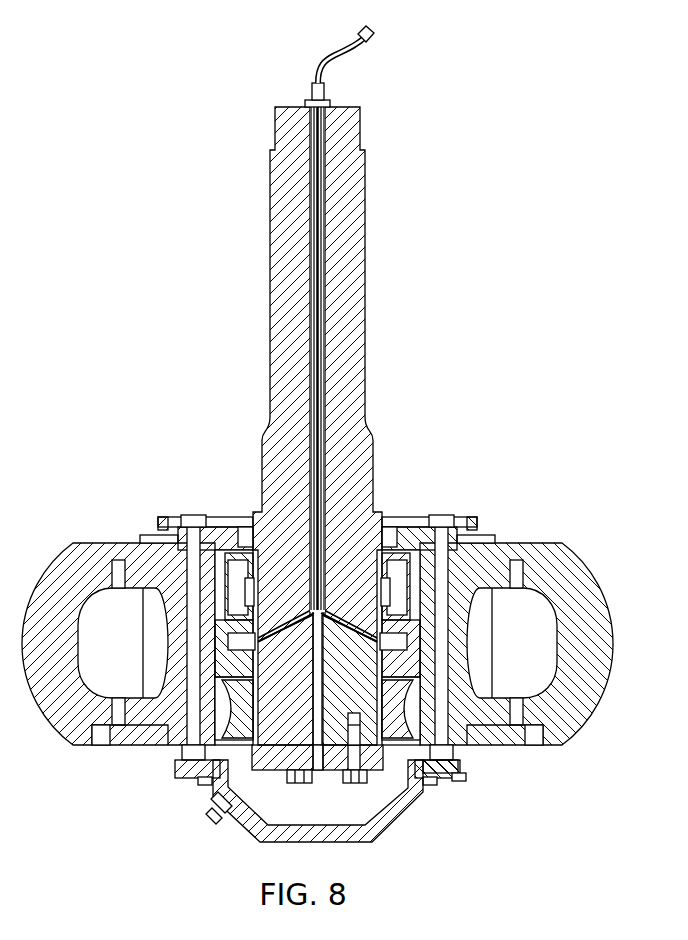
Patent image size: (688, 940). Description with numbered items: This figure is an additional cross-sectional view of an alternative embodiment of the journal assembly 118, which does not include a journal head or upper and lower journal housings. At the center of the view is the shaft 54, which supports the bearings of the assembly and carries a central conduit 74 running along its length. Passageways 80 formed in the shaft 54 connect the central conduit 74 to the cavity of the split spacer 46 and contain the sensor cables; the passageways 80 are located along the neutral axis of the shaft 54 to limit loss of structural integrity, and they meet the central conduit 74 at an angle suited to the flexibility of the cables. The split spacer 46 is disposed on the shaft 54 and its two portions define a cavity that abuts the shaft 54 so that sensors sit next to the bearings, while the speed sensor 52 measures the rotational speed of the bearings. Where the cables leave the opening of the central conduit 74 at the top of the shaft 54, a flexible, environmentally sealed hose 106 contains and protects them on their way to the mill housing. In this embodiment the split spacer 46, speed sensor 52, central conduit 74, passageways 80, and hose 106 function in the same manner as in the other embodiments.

The journal assembly 118 is at (484, 250).
The shaft 54 is at (282, 292).
The central conduit 74 is at (318, 333).
The hose 106 is at (337, 55).
The passageways 80 is at (265, 620).
The speed sensor 52 is at (222, 623).
The split spacer 46 is at (216, 663).